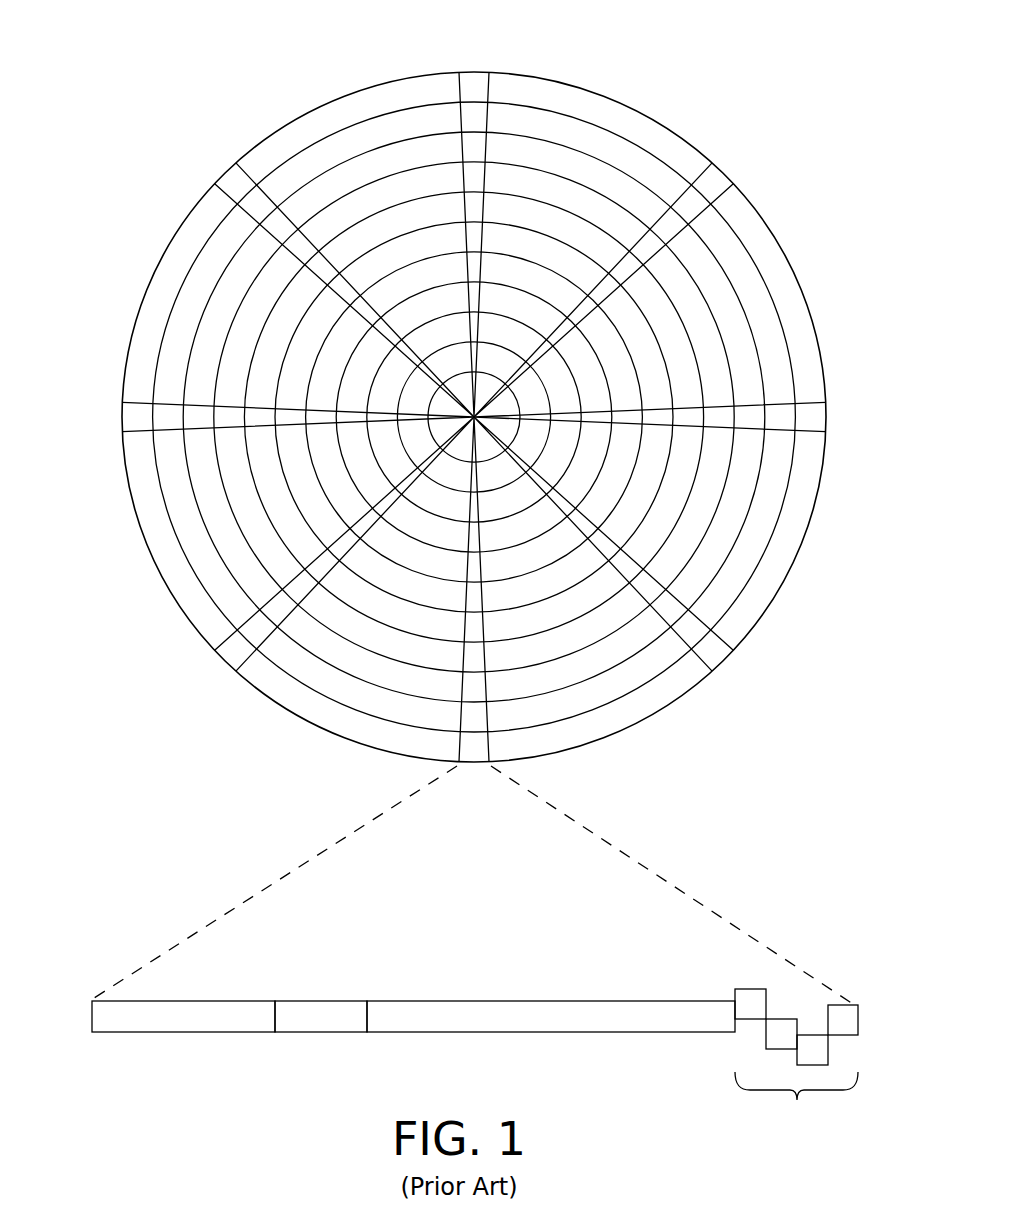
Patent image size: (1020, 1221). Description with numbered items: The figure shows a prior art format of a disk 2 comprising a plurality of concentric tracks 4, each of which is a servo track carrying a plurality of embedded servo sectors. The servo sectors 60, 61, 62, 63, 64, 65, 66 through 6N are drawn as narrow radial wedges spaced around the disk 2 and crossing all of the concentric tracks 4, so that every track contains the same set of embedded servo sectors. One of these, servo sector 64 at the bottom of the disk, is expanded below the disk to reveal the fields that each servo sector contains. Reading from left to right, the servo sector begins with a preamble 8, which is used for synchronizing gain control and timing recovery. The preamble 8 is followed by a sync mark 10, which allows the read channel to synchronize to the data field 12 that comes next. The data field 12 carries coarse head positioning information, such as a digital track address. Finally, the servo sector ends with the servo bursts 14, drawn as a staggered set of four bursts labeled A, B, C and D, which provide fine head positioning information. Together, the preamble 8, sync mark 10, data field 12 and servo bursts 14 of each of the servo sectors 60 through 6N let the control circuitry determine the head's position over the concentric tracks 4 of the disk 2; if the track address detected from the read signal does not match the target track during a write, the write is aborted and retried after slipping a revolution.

The disk 2 is at (215, 75).
The concentric tracks 4 is at (594, 140).
The servo sector 60 is at (475, 83).
The servo sector 61 is at (713, 182).
The servo sector 62 is at (822, 418).
The servo sector 63 is at (722, 662).
The servo sector 64 is at (320, 843).
The servo sector 65 is at (230, 657).
The servo sector 66 is at (127, 415).
The servo sector 6N is at (232, 178).
The preamble 8 is at (161, 1033).
The sync mark 10 is at (316, 1033).
The data field 12 is at (540, 1033).
The servo bursts 14 is at (723, 971).